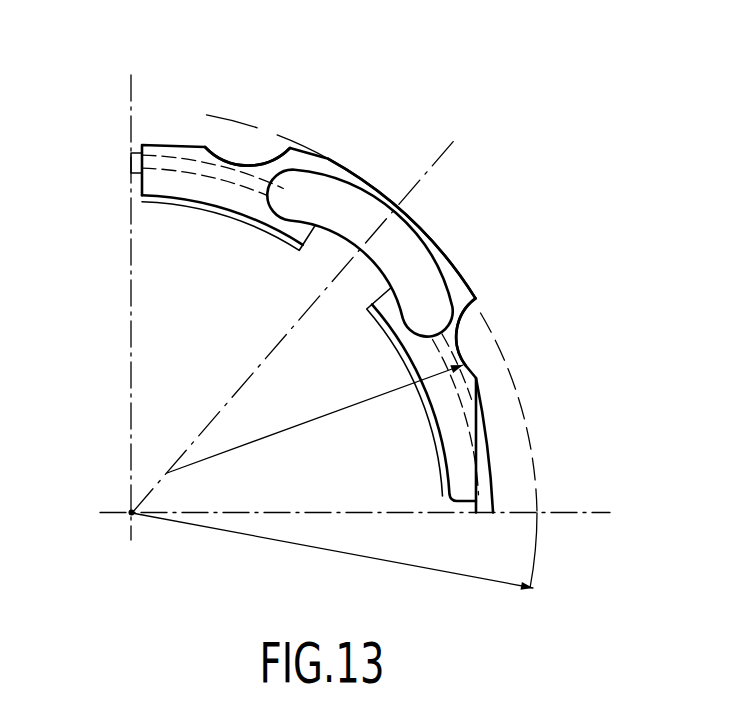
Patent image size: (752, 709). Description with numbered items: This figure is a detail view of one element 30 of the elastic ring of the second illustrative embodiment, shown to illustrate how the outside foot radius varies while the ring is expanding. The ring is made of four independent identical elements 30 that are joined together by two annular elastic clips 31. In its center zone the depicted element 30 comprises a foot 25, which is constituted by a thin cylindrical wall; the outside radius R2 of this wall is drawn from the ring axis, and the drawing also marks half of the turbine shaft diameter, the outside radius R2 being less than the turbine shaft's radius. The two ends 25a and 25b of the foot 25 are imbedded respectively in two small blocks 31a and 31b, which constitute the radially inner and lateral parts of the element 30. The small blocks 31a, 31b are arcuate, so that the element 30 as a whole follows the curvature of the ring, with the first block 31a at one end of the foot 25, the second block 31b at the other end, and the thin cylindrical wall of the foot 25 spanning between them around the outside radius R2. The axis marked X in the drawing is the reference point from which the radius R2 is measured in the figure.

The element 30 is at (405, 148).
The foot 25 is at (431, 228).
The end of foot 25a is at (273, 165).
The end of foot 25b is at (468, 328).
The annular elastic clip 31 is at (348, 238).
The small block 31a is at (208, 192).
The small block 31b is at (445, 410).
The outside radius R2 is at (315, 419).
The axis X is at (130, 511).